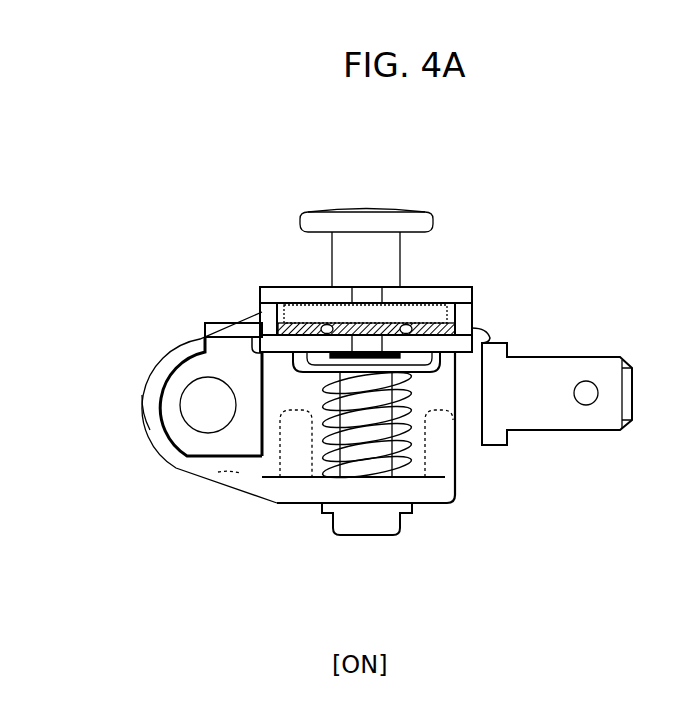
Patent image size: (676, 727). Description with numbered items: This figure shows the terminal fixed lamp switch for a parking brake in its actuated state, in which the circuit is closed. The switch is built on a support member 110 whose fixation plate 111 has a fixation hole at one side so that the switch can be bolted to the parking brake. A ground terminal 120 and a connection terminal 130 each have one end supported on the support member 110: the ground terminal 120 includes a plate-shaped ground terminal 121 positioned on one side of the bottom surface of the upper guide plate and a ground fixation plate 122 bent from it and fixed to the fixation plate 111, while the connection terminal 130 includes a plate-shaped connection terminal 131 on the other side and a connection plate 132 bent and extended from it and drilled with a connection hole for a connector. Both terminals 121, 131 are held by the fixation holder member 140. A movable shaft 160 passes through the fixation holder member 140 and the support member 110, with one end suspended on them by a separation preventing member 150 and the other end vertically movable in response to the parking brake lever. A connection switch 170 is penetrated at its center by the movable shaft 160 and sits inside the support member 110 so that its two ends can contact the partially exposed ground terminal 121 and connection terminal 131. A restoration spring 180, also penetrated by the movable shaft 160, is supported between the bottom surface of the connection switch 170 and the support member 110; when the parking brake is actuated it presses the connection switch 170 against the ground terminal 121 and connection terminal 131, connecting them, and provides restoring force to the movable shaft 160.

The support member 110 is at (433, 515).
The fixation plate 111 is at (148, 422).
The ground terminal 120 is at (177, 467).
The ground terminal 121 is at (278, 322).
The ground fixation plate 122 is at (177, 383).
The connection terminal 130 is at (523, 337).
The connection terminal 131 is at (456, 325).
The connection plate 132 is at (555, 423).
The fixation holder member 140 is at (277, 270).
The separation preventing member 150 is at (368, 523).
The movable shaft 160 is at (418, 258).
The connection switch 170 is at (430, 378).
The restoration spring 180 is at (330, 440).